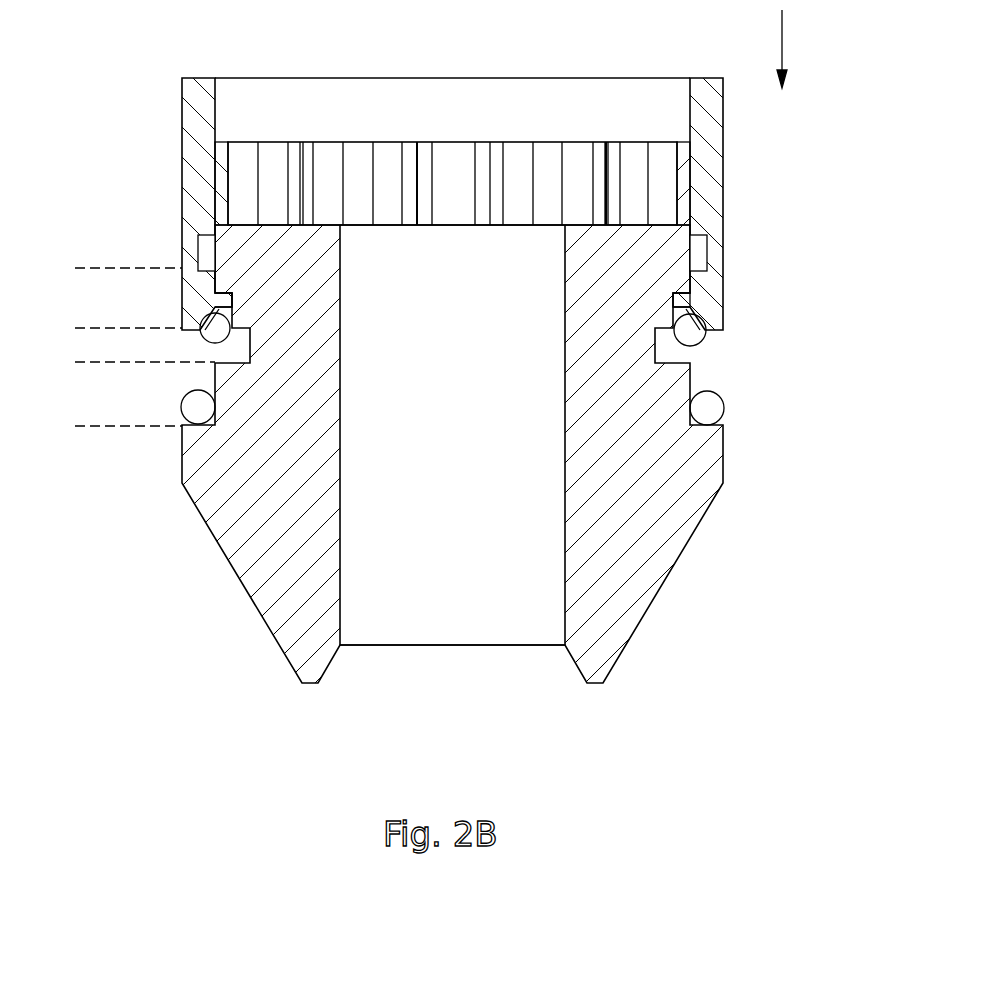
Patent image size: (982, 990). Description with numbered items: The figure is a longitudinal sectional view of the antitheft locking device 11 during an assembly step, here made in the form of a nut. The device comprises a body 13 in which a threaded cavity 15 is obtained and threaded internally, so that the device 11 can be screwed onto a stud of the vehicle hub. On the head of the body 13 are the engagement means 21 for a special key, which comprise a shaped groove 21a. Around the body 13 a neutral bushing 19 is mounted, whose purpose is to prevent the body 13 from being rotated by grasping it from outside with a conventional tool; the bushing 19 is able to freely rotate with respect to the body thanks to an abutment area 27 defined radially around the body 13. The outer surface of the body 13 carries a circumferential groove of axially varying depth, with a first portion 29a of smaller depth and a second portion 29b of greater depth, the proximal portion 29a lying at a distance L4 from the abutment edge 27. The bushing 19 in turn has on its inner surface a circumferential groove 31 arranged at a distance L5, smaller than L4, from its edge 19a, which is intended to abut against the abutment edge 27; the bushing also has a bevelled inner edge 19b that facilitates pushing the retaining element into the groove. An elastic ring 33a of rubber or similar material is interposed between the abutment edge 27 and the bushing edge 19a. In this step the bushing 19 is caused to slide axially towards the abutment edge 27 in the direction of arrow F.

The antitheft locking device 11 is at (194, 667).
The body 13 is at (253, 518).
The threaded cavity 15 is at (469, 431).
The neutral bushing 19 is at (724, 118).
The edge of the bushing 19a is at (706, 332).
The bevelled inner edge 19b is at (695, 278).
The engagement means 21 is at (453, 180).
The groove 21a is at (354, 168).
The abutment area 27 is at (708, 408).
The first portion of the circumferential groove 29a is at (255, 278).
The second portion of the circumferential groove 29b is at (657, 356).
The circumferential groove of the bushing 31 is at (655, 219).
The ring 33a is at (198, 407).
The distance L4 is at (137, 394).
The distance L5 is at (121, 298).
The arrow F is at (790, 49).